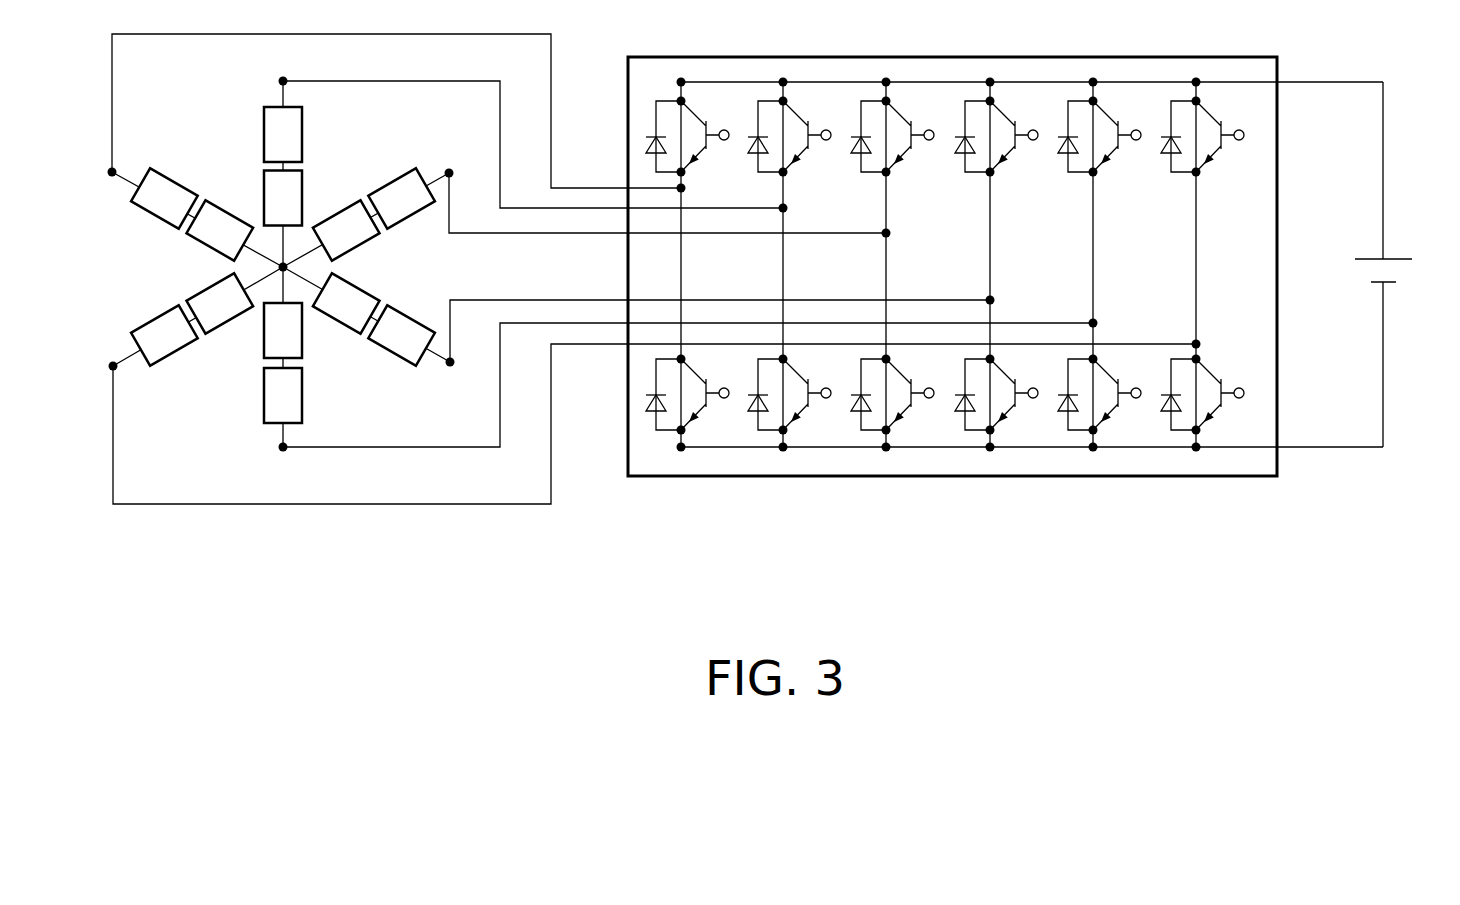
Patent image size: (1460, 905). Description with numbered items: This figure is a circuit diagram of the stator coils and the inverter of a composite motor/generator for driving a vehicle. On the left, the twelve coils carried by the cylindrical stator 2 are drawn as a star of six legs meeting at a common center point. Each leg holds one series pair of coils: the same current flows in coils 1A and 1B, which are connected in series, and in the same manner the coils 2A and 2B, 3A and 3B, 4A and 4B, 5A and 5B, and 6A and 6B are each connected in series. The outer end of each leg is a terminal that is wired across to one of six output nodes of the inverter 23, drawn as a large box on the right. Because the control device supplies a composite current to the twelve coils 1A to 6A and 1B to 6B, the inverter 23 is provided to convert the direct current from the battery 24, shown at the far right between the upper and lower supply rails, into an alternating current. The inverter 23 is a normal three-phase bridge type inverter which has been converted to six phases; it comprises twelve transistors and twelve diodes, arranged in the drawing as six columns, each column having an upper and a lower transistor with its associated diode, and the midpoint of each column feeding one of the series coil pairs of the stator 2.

The stator 2 is at (212, 532).
The coil 1A is at (164, 198).
The coil 1B is at (219, 230).
The coil 2A is at (283, 134).
The coil 2B is at (283, 198).
The coil 3A is at (401, 198).
The coil 3B is at (346, 230).
The coil 4A is at (401, 335).
The coil 4B is at (346, 303).
The coil 5A is at (283, 395).
The coil 5B is at (283, 330).
The coil 6A is at (164, 335).
The coil 6B is at (219, 303).
The inverter 23 is at (1088, 478).
The battery 24 is at (1405, 278).